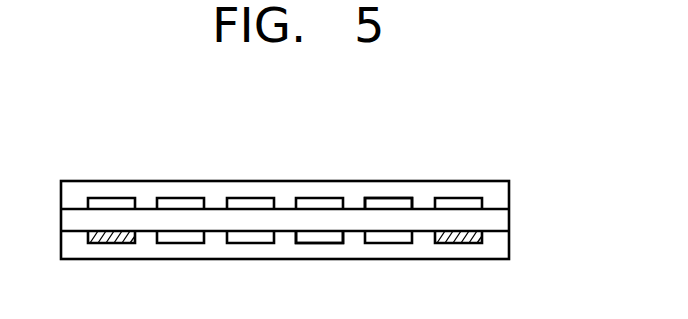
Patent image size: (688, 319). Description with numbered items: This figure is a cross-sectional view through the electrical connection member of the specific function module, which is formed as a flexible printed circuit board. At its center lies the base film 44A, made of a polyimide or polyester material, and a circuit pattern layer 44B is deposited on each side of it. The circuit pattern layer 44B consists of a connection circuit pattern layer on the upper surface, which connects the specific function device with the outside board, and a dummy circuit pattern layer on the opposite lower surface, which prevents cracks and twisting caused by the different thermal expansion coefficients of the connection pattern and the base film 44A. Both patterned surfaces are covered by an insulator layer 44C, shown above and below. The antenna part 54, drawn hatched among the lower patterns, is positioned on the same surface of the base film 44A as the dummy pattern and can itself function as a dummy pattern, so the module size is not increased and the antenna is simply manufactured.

The insulator layer 44C is at (502, 191).
The base film 44A is at (502, 219).
The circuit pattern layer 44B is at (320, 197).
The antenna part 54 is at (458, 243).